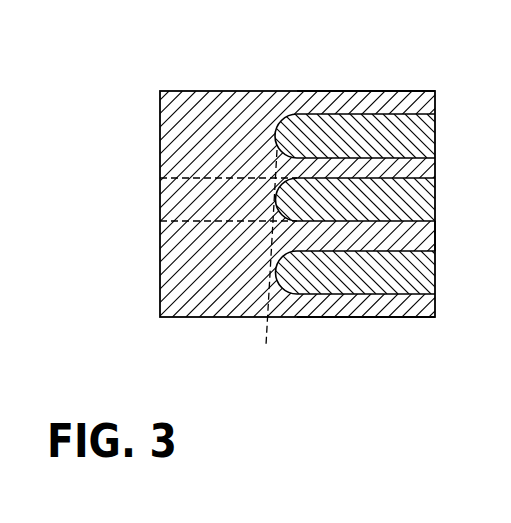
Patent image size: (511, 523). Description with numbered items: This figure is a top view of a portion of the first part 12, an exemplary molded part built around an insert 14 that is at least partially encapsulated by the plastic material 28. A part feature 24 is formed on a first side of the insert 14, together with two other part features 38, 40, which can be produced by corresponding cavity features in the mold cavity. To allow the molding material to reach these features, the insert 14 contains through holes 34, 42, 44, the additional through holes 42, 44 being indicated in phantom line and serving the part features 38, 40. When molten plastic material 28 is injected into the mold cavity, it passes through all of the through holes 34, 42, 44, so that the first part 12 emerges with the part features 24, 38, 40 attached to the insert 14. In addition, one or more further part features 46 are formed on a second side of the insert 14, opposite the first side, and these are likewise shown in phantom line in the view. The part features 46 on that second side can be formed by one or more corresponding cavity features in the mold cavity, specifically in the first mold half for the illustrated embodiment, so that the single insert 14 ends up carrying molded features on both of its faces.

The first part 12 is at (247, 84).
The insert 14 is at (198, 293).
The part feature 24 is at (403, 223).
The plastic material 28 is at (295, 302).
The through hole 34 is at (315, 190).
The part feature 38 is at (418, 113).
The part feature 40 is at (412, 298).
The through hole 42 is at (279, 128).
The through hole 44 is at (315, 272).
The part feature 46 is at (200, 177).